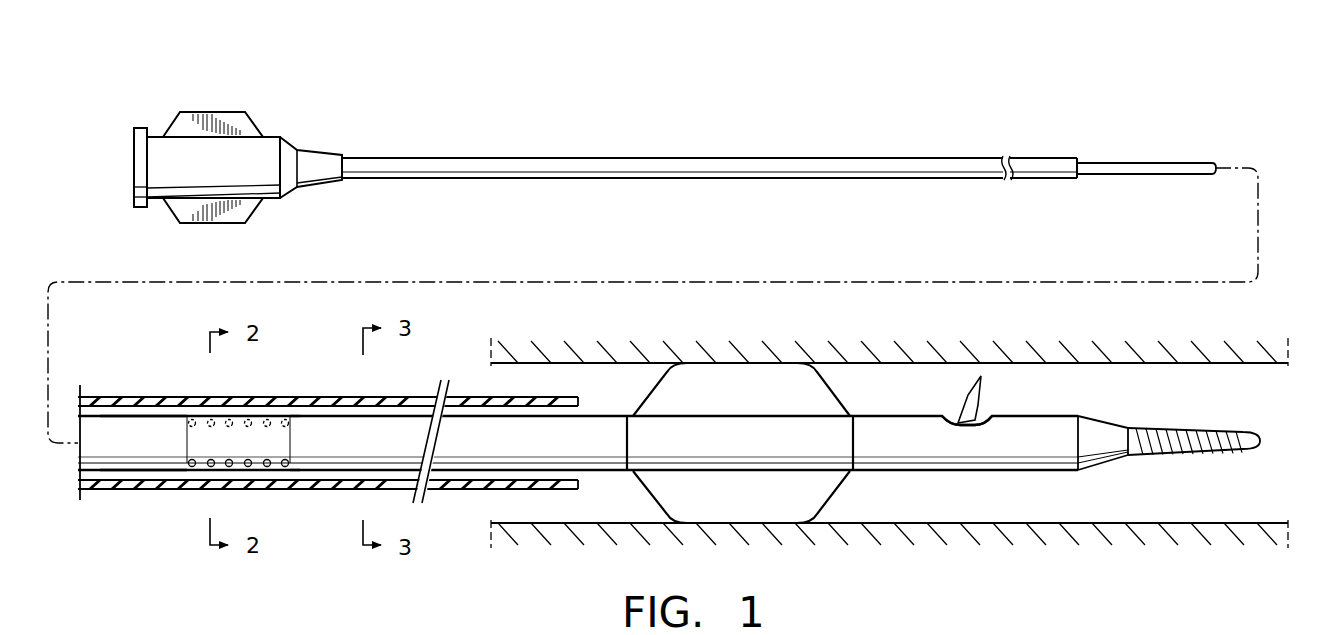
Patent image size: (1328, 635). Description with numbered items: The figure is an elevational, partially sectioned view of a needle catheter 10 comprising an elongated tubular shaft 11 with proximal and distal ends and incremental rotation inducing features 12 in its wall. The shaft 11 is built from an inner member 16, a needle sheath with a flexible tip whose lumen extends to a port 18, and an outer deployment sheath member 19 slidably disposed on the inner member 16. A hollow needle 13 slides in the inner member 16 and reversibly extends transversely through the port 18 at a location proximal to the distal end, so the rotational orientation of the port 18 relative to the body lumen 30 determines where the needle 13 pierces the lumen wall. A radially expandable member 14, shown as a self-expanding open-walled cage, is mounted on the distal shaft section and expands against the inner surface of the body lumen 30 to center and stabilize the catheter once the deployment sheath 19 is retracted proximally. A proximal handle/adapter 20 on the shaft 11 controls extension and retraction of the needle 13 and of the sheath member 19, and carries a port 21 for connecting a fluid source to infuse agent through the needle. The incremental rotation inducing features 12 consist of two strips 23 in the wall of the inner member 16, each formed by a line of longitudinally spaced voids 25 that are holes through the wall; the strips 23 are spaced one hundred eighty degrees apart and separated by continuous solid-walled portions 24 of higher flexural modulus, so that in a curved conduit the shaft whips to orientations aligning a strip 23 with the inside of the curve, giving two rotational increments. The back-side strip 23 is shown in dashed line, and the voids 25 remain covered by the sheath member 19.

The catheter 10 is at (658, 132).
The elongated tubular shaft 11 is at (970, 156).
The incremental rotation inducing features 12 is at (187, 392).
The needle 13 is at (985, 385).
The radially expandable member 14 is at (833, 394).
The inner member 16 is at (1150, 163).
The port 18 is at (985, 417).
The outer deployment sheath member 19 is at (1046, 178).
The proximal handle/adapter 20 is at (284, 143).
The port 21 is at (133, 162).
The strips 23 is at (302, 423).
The portions of the wall 24 is at (196, 446).
The voids 25 is at (190, 423).
The body lumen 30 is at (1158, 405).